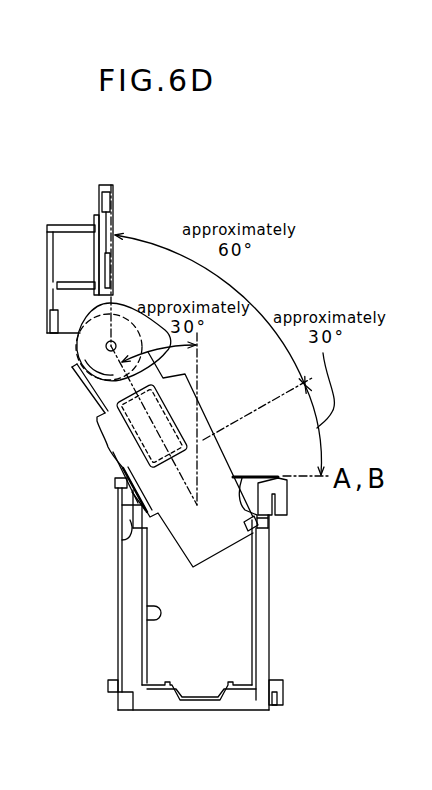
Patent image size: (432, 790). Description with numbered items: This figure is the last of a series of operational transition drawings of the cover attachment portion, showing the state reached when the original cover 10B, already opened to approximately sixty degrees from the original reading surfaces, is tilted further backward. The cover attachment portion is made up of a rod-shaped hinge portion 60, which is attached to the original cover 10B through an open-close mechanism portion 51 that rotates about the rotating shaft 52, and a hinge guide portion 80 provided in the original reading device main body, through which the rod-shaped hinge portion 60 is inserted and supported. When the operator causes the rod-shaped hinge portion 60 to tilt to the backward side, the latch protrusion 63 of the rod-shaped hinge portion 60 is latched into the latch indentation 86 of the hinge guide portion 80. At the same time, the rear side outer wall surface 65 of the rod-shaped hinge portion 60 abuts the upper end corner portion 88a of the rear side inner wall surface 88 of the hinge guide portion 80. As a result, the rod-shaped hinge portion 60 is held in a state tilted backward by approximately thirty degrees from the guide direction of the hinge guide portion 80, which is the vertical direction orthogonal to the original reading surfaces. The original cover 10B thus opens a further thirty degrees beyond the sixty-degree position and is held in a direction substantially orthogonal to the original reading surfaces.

The original cover 10B is at (68, 225).
The open-close mechanism portion 51 is at (75, 343).
The rotating shaft 52 is at (78, 388).
The rod-shaped hinge portion 60 is at (100, 434).
The latch protrusion 63 is at (253, 477).
The rear side outer wall surface 65 is at (116, 475).
The hinge guide portion 80 is at (262, 626).
The latch indentation 86 is at (270, 528).
The rear side inner wall surface 88 is at (143, 617).
The upper end corner portion 88a is at (120, 543).